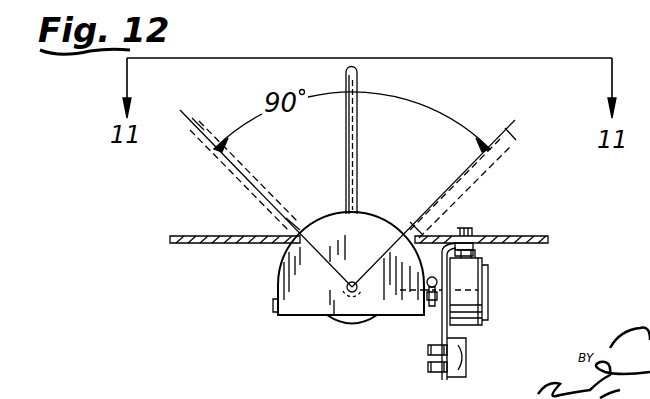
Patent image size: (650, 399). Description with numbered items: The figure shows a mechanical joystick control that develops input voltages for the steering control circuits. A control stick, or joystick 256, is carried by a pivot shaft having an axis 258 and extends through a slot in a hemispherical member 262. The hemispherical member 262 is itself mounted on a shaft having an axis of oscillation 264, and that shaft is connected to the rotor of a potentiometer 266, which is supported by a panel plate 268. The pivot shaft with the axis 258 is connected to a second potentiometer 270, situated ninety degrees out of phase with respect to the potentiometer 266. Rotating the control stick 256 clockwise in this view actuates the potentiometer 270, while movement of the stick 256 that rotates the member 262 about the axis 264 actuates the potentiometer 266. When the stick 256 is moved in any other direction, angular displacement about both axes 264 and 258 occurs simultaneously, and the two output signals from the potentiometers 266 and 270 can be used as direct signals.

The joystick 256 is at (357, 165).
The pivot shaft axis 258 is at (352, 290).
The hemispherical member 262 is at (312, 222).
The axis of oscillation 264 is at (433, 306).
The potentiometer 266 is at (482, 290).
The panel plate 268 is at (540, 236).
The second potentiometer 270 is at (333, 323).